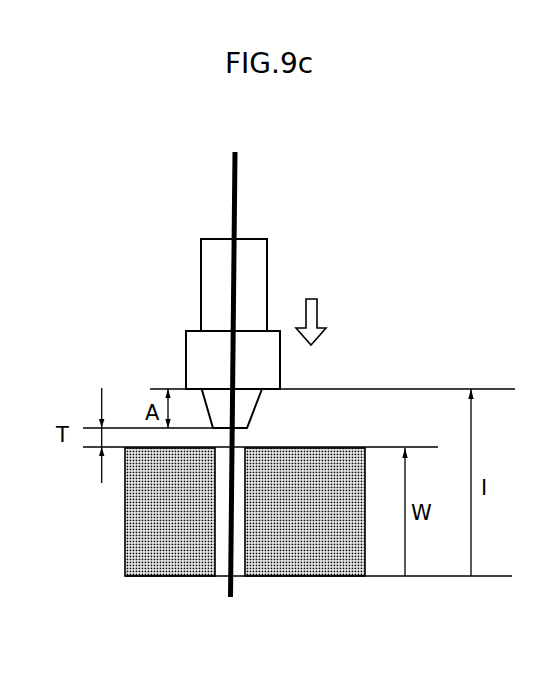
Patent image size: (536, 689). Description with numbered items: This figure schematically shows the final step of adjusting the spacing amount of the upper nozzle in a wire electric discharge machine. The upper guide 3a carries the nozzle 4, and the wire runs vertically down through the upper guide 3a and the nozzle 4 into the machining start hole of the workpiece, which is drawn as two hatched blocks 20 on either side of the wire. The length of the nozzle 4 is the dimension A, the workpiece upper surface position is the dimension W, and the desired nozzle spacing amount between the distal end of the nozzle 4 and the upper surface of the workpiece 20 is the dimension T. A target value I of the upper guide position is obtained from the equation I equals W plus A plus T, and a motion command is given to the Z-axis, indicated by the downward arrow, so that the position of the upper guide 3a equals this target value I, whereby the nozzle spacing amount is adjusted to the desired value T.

The upper guide 3a is at (198, 344).
The nozzle 4 is at (247, 403).
The die 20 is at (330, 462).